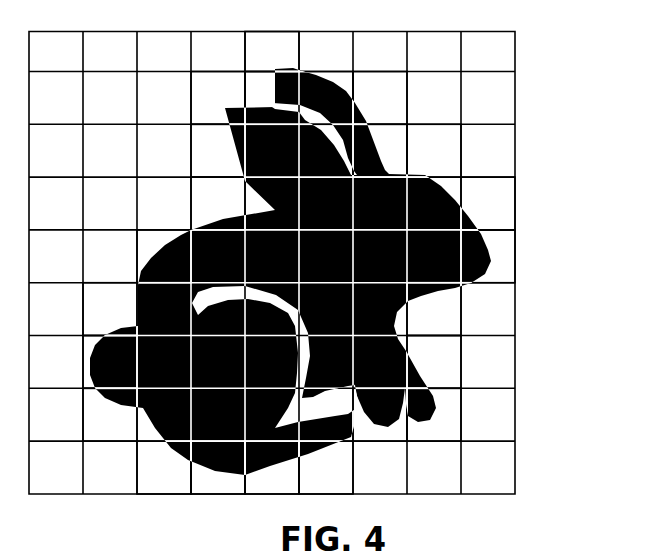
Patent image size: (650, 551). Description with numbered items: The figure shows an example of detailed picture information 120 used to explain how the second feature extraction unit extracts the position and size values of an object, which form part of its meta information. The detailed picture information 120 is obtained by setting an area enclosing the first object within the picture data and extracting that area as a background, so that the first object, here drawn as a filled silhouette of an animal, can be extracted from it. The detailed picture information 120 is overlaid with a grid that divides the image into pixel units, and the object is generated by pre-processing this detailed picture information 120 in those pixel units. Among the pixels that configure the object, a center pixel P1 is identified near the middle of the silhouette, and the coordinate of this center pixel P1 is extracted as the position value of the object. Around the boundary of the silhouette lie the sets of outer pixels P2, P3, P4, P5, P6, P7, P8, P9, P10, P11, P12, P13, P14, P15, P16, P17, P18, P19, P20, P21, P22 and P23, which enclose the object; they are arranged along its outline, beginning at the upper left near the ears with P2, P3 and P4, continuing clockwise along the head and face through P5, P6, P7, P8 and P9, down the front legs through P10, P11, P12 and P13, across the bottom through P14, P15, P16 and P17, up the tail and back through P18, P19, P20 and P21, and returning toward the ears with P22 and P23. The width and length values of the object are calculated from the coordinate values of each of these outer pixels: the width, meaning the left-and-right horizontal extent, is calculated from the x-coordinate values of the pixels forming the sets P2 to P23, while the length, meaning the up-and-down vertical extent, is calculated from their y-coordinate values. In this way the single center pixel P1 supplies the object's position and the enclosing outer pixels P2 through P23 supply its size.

The detailed picture information 120 is at (523, 207).
The center pixel P1 is at (290, 271).
The outer pixel P2 is at (218, 98).
The outer pixel P3 is at (272, 52).
The outer pixel P4 is at (299, 98).
The outer pixel P5 is at (380, 98).
The outer pixel P6 is at (380, 150).
The outer pixel P7 is at (434, 150).
The outer pixel P8 is at (488, 203).
The outer pixel P9 is at (488, 256).
The outer pixel P10 is at (434, 309).
The outer pixel P11 is at (434, 362).
The outer pixel P12 is at (434, 415).
The outer pixel P13 is at (380, 416).
The outer pixel P14 is at (326, 467).
The outer pixel P15 is at (272, 468).
The outer pixel P16 is at (218, 468).
The outer pixel P17 is at (164, 467).
The outer pixel P18 is at (110, 414).
The outer pixel P19 is at (110, 362).
The outer pixel P20 is at (110, 309).
The outer pixel P21 is at (164, 256).
The outer pixel P22 is at (218, 203).
The outer pixel P23 is at (218, 150).